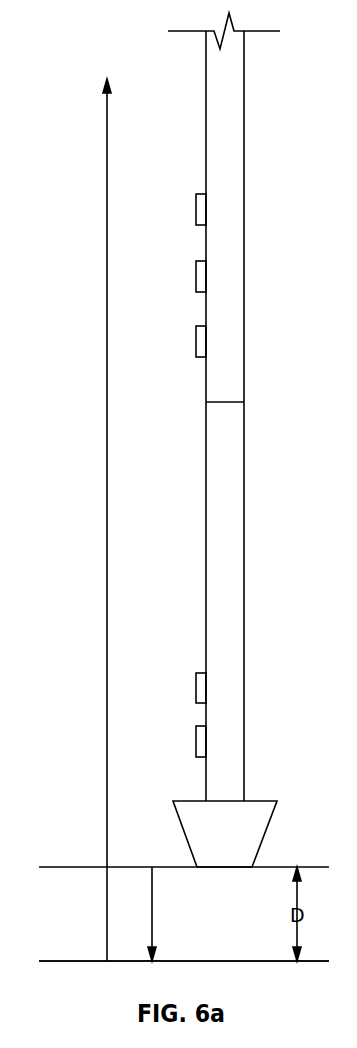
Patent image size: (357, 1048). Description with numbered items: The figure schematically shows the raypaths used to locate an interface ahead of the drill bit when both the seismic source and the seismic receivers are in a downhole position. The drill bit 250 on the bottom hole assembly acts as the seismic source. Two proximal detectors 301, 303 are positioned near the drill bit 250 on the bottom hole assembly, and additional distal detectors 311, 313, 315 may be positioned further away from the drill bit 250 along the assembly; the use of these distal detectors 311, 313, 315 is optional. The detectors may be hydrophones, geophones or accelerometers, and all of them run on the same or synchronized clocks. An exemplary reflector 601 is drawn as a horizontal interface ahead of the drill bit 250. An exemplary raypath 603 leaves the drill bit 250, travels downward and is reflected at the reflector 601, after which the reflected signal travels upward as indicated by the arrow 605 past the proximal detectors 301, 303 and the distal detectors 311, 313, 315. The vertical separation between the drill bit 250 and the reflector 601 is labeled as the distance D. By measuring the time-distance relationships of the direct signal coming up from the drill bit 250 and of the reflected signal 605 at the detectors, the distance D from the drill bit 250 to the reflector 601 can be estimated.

The distal detector 315 is at (196, 210).
The distal detector 313 is at (196, 277).
The distal detector 311 is at (196, 342).
The proximal detector 303 is at (196, 690).
The proximal detector 301 is at (196, 743).
The drill bit 250 is at (197, 832).
The reflected signal 605 is at (107, 915).
The raypath 603 is at (152, 913).
The reflector 601 is at (245, 961).